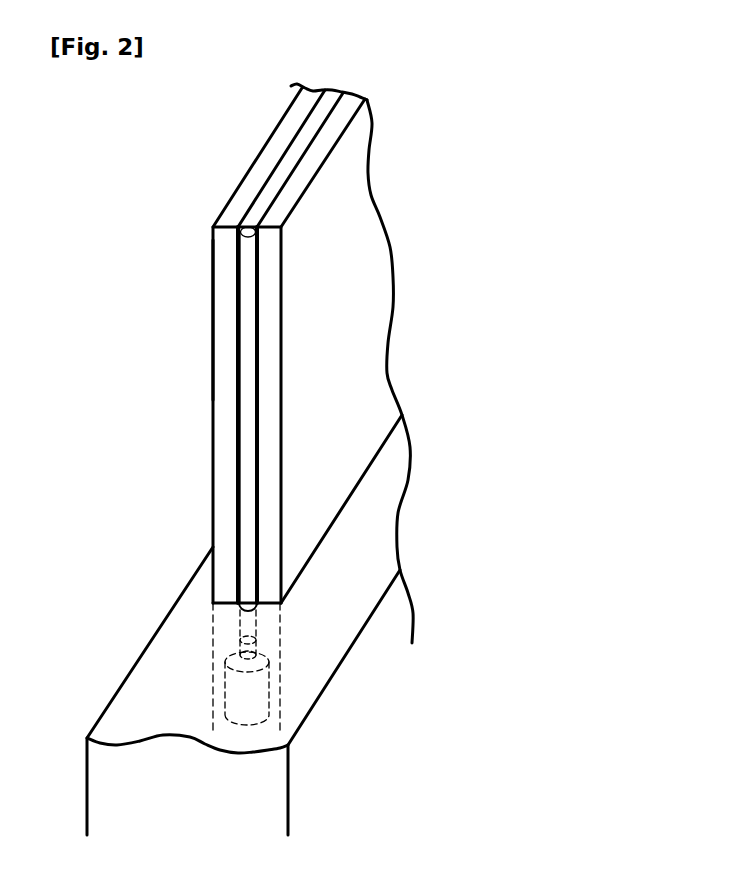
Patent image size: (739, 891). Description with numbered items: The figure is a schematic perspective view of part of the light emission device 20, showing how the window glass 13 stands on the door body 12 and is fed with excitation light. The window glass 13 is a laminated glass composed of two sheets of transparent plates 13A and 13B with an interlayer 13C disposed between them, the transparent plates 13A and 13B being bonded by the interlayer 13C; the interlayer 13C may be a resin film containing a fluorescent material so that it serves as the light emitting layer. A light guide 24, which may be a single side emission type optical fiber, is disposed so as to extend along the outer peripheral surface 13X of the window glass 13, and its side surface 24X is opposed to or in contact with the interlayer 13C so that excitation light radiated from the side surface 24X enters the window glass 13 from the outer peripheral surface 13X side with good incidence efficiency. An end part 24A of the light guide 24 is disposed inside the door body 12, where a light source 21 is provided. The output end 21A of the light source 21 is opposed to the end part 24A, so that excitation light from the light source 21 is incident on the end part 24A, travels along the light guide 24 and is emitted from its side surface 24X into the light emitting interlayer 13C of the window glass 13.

The door body 12 is at (177, 645).
The window glass 13 is at (492, 178).
The transparent plate 13A is at (245, 193).
The transparent plate 13B is at (330, 132).
The interlayer 13C is at (283, 170).
The outer peripheral surface 13X is at (222, 248).
The light emission device 20 is at (418, 297).
The light source 21 is at (225, 688).
The output end 21A is at (253, 633).
The light guide 24 is at (247, 388).
The end part 24A is at (280, 685).
The side surface 24X is at (258, 247).